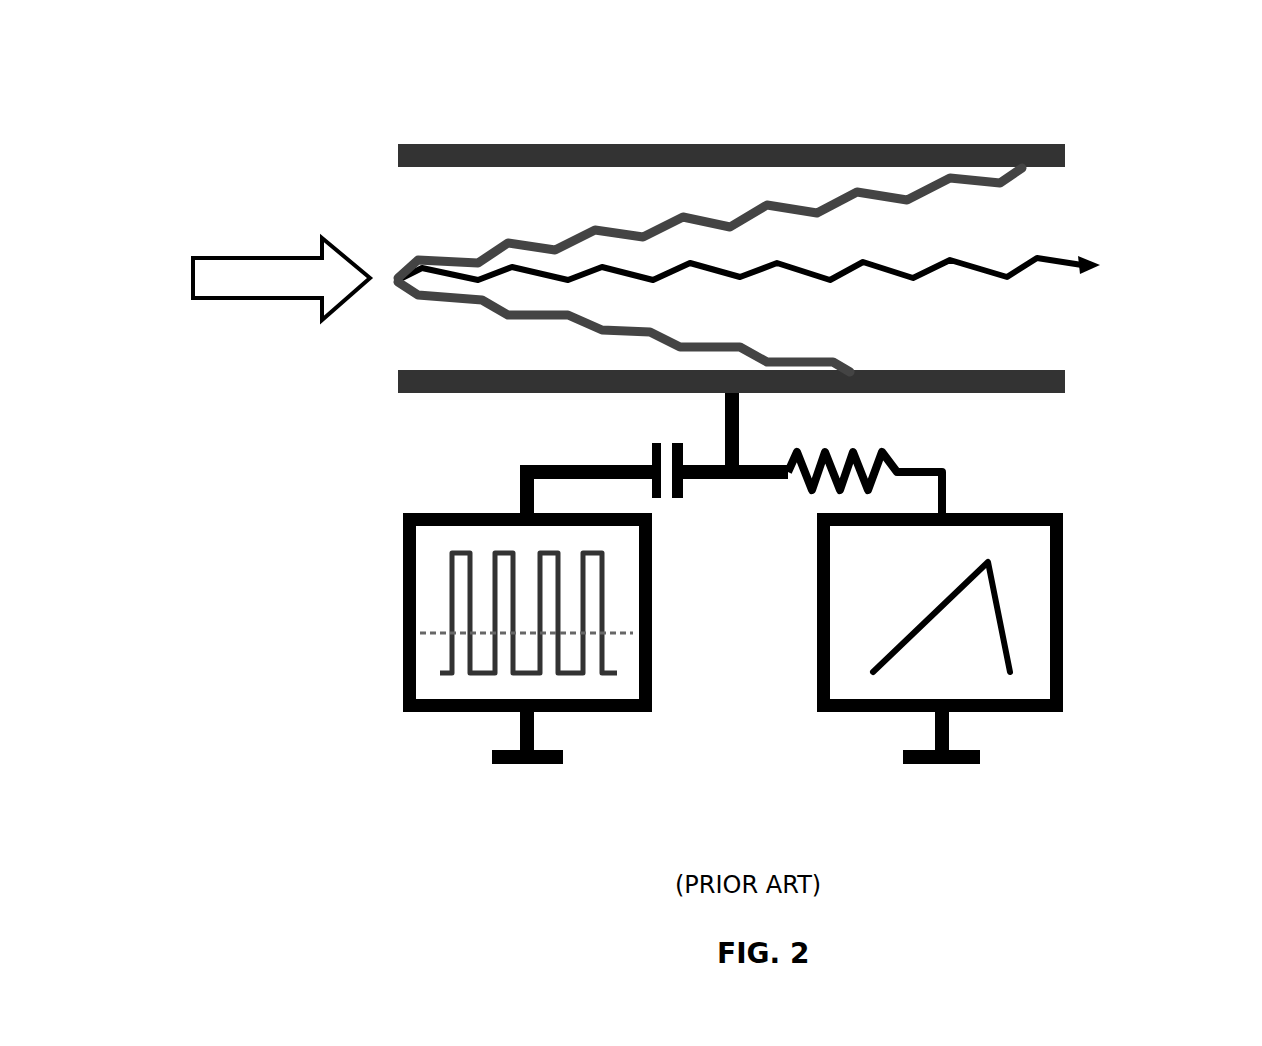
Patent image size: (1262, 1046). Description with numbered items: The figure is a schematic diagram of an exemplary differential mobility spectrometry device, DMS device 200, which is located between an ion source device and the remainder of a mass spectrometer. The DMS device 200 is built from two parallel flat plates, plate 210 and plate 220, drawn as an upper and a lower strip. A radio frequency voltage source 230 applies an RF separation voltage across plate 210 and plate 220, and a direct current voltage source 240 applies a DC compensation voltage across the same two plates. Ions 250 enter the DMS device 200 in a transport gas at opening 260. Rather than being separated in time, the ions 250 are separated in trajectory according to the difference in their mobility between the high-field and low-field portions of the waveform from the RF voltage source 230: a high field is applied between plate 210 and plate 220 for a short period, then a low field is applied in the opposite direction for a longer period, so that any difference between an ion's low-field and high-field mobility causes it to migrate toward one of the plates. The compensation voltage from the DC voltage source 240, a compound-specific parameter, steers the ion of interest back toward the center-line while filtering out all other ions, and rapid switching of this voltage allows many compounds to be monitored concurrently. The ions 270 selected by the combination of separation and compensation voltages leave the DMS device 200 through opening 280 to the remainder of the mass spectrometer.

The DMS device 200 is at (567, 868).
The plate 210 is at (406, 152).
The plate 220 is at (402, 388).
The radio frequency (RF) voltage source 230 is at (405, 698).
The direct current (DC) voltage source 240 is at (1063, 688).
The ions 250 is at (400, 276).
The opening 260 is at (316, 193).
The ions 270 is at (1097, 272).
The opening 280 is at (1095, 198).